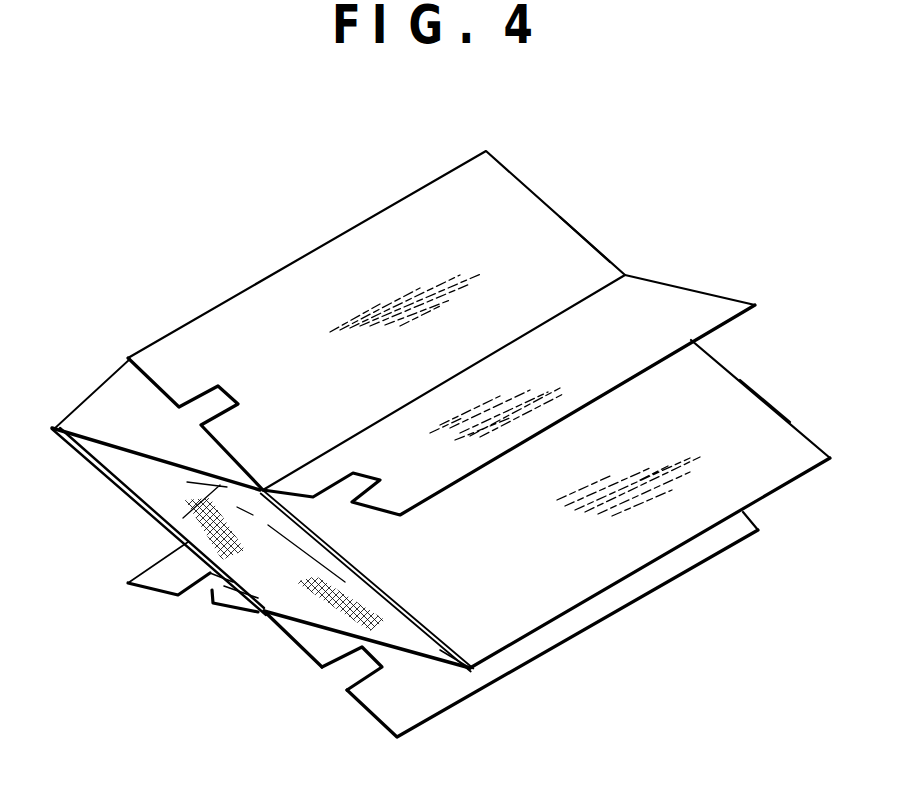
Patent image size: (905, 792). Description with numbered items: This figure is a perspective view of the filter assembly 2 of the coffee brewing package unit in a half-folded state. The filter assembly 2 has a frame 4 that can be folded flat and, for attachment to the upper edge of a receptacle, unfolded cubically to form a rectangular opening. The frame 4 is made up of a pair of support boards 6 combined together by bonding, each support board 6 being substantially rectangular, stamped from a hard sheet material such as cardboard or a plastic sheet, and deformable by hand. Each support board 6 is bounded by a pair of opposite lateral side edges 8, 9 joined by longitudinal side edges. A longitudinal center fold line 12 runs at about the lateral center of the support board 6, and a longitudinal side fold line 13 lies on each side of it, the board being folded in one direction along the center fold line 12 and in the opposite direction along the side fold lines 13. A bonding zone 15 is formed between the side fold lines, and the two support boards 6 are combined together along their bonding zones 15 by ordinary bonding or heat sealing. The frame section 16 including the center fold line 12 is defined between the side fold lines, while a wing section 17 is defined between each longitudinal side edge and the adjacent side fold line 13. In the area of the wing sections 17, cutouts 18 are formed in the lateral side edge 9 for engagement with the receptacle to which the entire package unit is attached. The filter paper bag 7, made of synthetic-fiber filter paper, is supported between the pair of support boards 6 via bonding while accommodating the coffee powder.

The filter assembly 2 is at (343, 218).
The frame 4 is at (746, 383).
The support board 6 is at (556, 206).
The filter paper bag 7 is at (317, 590).
The lateral side edge 8 is at (787, 420).
The lateral side edge 9 is at (415, 657).
The longitudinal center fold line 12 is at (120, 388).
The longitudinal side fold line 13 is at (600, 257).
The bonding zone 15 is at (175, 525).
The frame section 16 is at (116, 434).
The wing section 17 is at (420, 240).
The cutout 18 is at (362, 478).